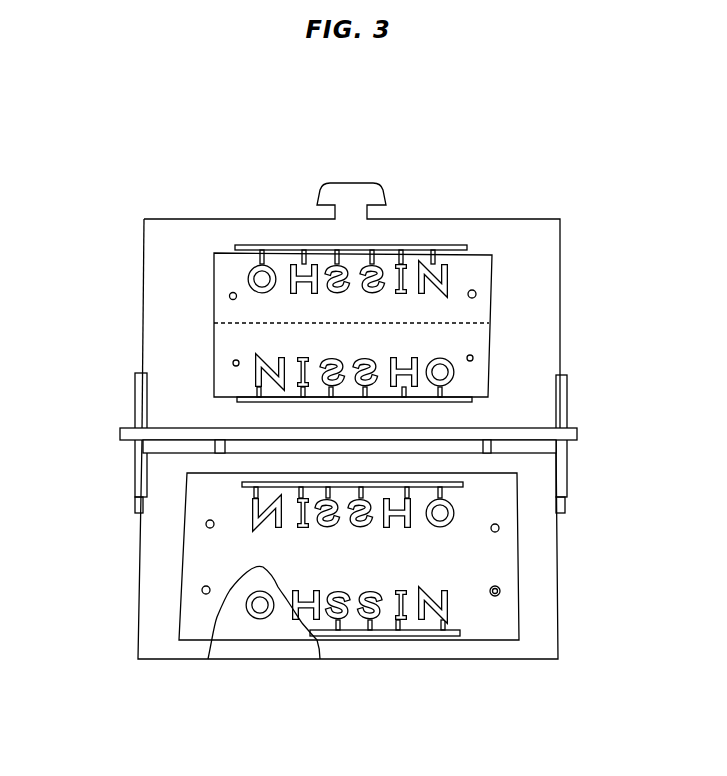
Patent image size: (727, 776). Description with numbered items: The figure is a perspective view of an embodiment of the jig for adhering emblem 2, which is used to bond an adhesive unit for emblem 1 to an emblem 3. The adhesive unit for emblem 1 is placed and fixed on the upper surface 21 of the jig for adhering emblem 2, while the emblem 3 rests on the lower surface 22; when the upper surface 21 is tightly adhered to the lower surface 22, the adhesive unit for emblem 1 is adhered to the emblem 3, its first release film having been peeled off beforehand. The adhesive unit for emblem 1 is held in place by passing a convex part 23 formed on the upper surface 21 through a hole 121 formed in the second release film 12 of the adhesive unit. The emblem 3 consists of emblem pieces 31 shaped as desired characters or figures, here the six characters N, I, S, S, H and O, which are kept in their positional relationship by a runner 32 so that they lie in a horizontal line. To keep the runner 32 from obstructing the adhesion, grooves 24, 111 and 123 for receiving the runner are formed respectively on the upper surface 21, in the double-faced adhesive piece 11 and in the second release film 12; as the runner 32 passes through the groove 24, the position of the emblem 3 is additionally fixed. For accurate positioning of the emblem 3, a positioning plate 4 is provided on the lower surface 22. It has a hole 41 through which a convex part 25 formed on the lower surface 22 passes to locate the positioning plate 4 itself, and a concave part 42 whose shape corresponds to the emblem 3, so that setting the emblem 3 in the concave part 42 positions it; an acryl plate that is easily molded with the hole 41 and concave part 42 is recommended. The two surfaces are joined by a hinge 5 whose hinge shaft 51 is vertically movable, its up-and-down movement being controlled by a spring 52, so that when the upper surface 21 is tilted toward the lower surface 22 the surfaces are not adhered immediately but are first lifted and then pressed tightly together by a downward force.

The adhesive unit for emblem 1 is at (532, 226).
The double-faced adhesive piece 11 is at (448, 280).
The groove 111 is at (235, 258).
The second release film 12 is at (482, 338).
The hole 121 is at (476, 294).
The groove 123 is at (235, 258).
The jig for adhering emblem 2 is at (453, 210).
The upper surface 21 is at (290, 227).
The lower surface 22 is at (155, 650).
The convex part 23 is at (470, 300).
The groove 24 is at (240, 398).
The convex part 25 is at (500, 591).
The emblem 3 is at (494, 591).
The emblem pieces 31 is at (431, 591).
The runner 32 is at (433, 634).
The positioning plate 4 is at (524, 526).
The hole 41 is at (495, 596).
The concave part 42 is at (265, 613).
The hinge 5 is at (321, 464).
The hinge shaft 51 is at (128, 443).
The spring 52 is at (222, 454).